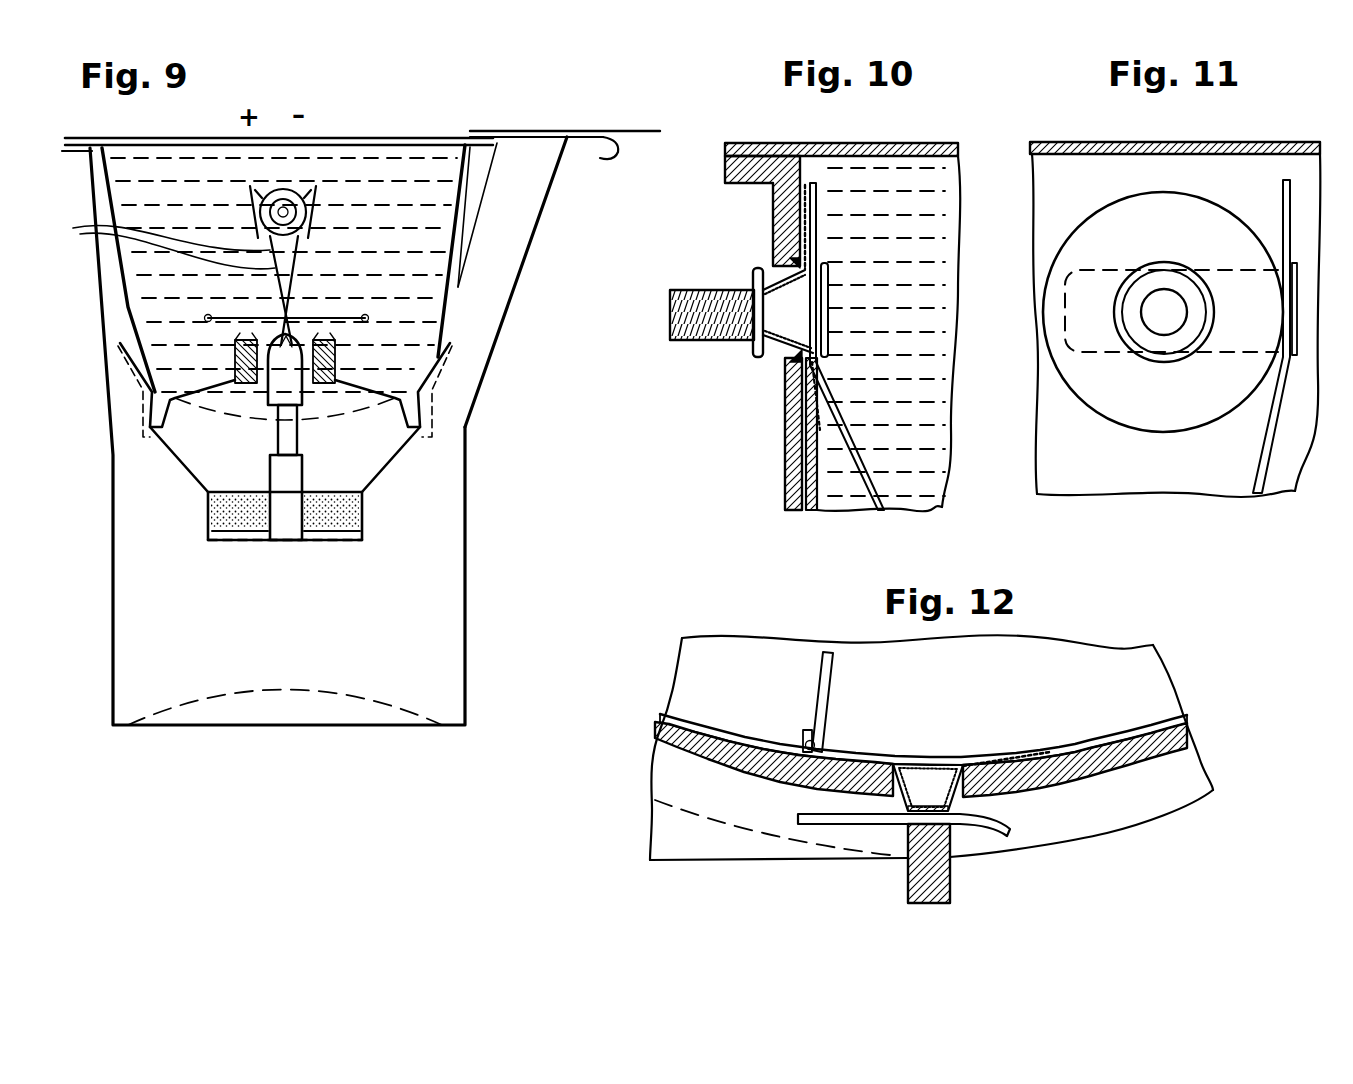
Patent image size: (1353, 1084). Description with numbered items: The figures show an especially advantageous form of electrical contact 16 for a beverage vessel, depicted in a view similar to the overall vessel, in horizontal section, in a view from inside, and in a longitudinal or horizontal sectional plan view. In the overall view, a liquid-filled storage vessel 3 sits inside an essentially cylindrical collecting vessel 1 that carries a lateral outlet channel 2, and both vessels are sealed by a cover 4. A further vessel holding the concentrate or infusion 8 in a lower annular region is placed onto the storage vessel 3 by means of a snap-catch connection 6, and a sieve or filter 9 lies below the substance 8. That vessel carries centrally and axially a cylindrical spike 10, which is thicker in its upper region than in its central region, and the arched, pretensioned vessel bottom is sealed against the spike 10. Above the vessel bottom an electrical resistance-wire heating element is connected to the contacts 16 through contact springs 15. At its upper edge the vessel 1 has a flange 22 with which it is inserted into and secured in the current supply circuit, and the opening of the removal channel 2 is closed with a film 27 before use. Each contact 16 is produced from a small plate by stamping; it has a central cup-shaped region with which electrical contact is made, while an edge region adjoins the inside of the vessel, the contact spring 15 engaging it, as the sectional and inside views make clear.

In FIG. 9, the collecting vessel 1 is at (468, 568).
In FIG. 10, the collecting vessel 1 is at (785, 430).
In FIG. 12, the collecting vessel 1 is at (668, 752).
In FIG. 9, the lateral outlet channel 2 is at (513, 240).
In FIG. 9, the storage vessel 3 is at (108, 268).
In FIG. 10, the storage vessel 3 is at (790, 470).
In FIG. 12, the storage vessel 3 is at (665, 716).
In FIG. 9, the cover 4 is at (376, 137).
In FIG. 10, the cover 4 is at (752, 143).
In FIG. 11, the cover 4 is at (1075, 142).
In FIG. 9, the snap-catch connection 6 is at (432, 392).
In FIG. 9, the concentrate or infusion 8 is at (212, 520).
In FIG. 9, the sieve or filter 9 is at (232, 545).
In FIG. 9, the cylindrical spike 10 is at (305, 430).
In FIG. 9, the contact spring 15 is at (159, 241).
In FIG. 10, the contact spring 15 is at (876, 500).
In FIG. 11, the contact spring 15 is at (1253, 490).
In FIG. 12, the contact spring 15 is at (823, 665).
In FIG. 9, the contact 16 is at (272, 192).
In FIG. 10, the contact 16 is at (757, 352).
In FIG. 11, the contact 16 is at (1093, 350).
In FIG. 12, the contact 16 is at (995, 833).
In FIG. 12, the flange 22 is at (655, 829).
In FIG. 9, the film 27 is at (630, 131).